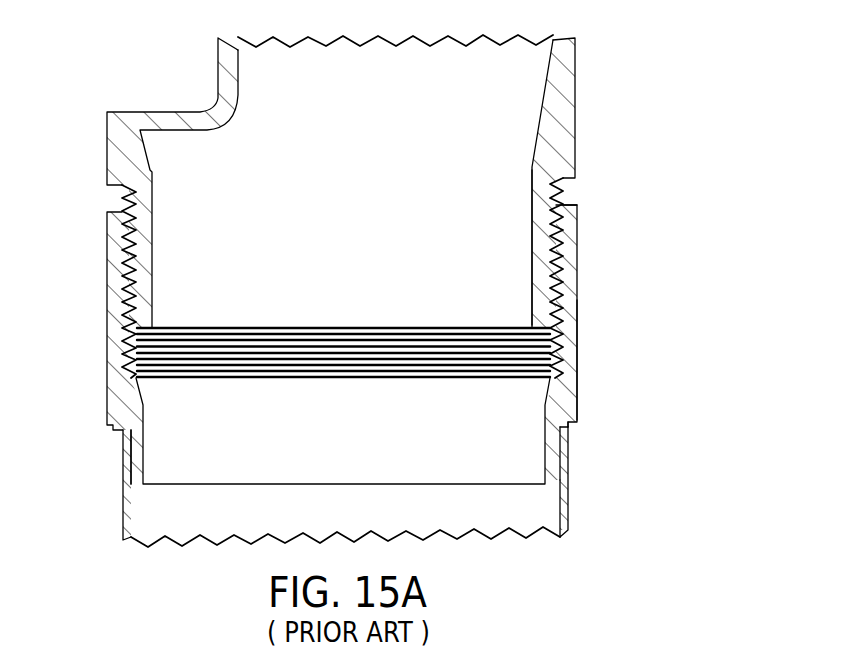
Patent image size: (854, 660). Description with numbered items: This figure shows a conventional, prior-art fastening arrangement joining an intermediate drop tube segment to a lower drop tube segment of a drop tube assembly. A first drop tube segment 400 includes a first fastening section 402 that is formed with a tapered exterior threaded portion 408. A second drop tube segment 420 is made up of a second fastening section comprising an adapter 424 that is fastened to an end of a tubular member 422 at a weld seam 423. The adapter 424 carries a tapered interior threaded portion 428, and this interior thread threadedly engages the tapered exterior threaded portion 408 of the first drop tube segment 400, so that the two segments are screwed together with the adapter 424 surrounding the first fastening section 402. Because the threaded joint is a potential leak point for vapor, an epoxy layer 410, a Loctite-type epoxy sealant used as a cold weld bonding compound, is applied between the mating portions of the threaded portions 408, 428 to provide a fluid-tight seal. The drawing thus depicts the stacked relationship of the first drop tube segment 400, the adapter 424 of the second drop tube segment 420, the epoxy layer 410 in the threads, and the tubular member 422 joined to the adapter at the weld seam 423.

The first drop tube segment 400 is at (397, 163).
The first fastening section 402 is at (474, 225).
The epoxy layer 410 is at (122, 243).
The tapered exterior threaded portion 408 is at (550, 221).
The second drop tube segment 420 is at (429, 344).
The adapter 424 is at (651, 334).
The tapered interior threaded portion 428 is at (549, 276).
The weld seam 423 is at (570, 427).
The tubular member 422 is at (569, 506).